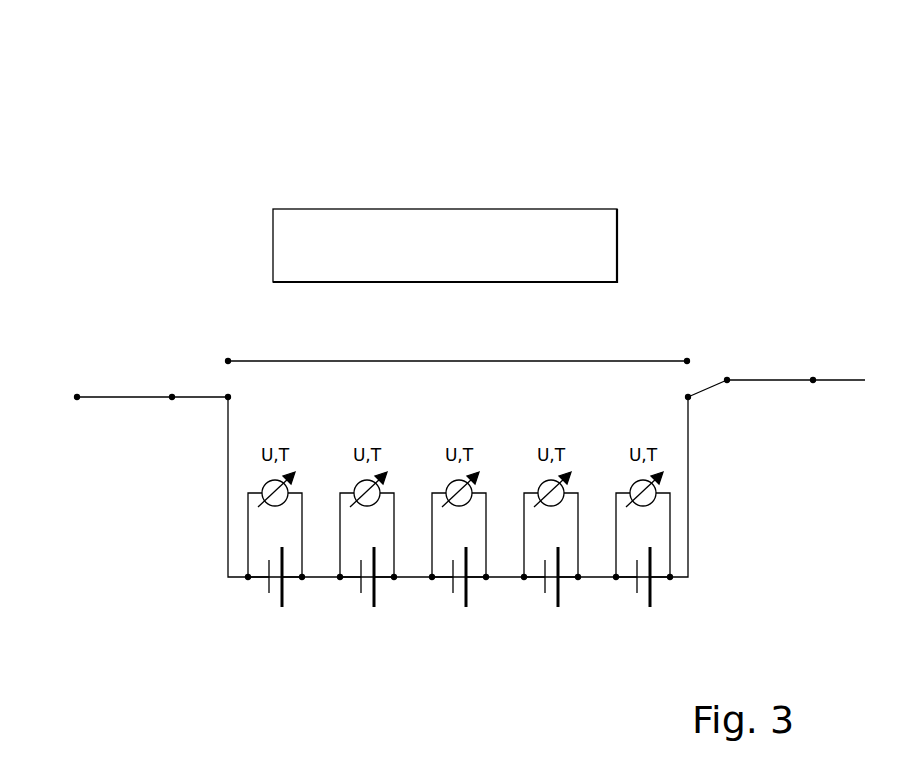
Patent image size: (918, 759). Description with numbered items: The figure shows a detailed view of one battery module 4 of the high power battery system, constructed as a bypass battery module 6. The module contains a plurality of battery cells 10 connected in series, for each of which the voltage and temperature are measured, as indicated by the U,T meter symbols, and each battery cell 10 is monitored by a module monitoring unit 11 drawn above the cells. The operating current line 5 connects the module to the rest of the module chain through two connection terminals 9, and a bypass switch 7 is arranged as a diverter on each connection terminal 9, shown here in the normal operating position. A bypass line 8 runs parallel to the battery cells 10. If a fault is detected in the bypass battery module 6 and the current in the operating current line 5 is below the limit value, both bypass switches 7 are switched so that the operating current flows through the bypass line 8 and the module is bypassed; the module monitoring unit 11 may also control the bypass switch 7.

The battery module 4 is at (153, 152).
The operating current line 5 is at (127, 397).
The bypass battery module 6 is at (626, 136).
The bypass switch 7 is at (200, 403).
The bypass line 8 is at (634, 361).
The connection terminal 9 is at (77, 397).
The battery cell 10 is at (248, 609).
The module monitoring unit 11 is at (435, 228).